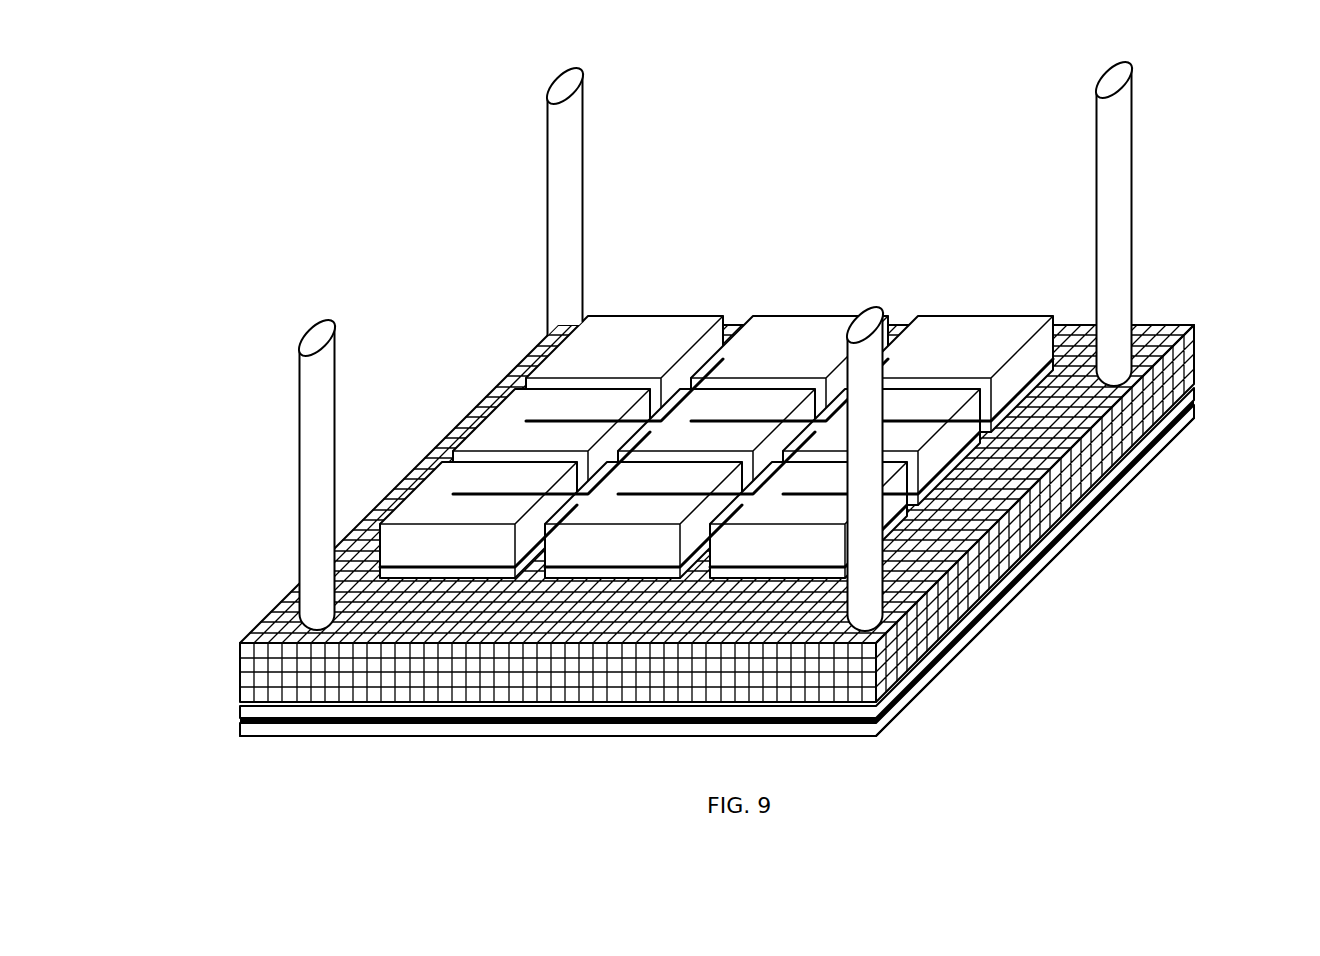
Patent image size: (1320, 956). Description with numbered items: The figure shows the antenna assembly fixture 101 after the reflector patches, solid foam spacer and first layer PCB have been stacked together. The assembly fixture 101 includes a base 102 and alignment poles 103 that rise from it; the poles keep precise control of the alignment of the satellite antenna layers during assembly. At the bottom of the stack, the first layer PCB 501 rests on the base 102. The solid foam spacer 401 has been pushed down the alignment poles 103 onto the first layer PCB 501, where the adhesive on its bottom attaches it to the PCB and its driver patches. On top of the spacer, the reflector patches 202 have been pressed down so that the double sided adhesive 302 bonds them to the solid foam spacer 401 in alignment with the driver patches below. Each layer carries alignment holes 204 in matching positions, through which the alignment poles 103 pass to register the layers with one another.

The assembly fixture 101 is at (488, 723).
The base 102 is at (832, 735).
The alignment poles 103 is at (1133, 179).
The reflector patches 202 is at (933, 318).
The alignment holes 204 is at (1150, 365).
The double sided adhesive 302 is at (958, 478).
The solid foam spacer 401 is at (240, 653).
The first layer PCB 501 is at (240, 716).